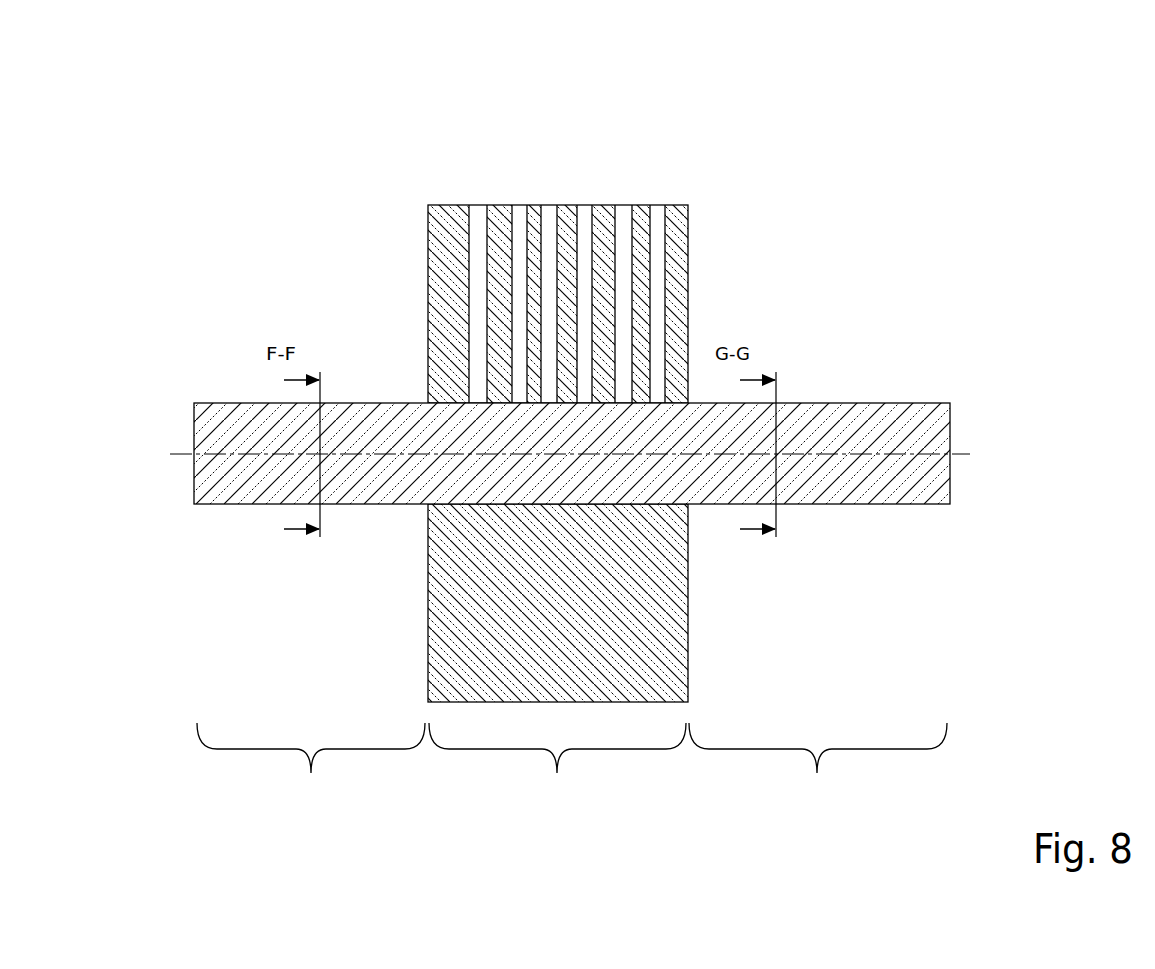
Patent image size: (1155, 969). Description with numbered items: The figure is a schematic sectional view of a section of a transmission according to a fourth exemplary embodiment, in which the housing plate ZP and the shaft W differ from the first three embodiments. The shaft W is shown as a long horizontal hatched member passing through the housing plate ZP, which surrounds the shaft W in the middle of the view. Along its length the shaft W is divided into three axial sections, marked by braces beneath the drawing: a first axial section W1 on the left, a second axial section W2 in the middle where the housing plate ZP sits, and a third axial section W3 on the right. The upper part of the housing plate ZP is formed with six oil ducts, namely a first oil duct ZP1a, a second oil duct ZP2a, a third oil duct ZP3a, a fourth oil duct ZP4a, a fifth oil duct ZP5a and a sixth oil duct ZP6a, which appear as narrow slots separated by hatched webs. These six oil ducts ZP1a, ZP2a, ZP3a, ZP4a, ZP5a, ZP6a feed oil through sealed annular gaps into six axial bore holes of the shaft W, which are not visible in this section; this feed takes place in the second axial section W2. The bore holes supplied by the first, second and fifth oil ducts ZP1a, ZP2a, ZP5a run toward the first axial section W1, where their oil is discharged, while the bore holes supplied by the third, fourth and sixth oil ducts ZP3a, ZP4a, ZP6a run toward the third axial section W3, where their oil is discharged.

The shaft W is at (225, 418).
The housing plate ZP is at (441, 243).
The first oil duct ZP1a is at (479, 202).
The second oil duct ZP2a is at (521, 202).
The third oil duct ZP3a is at (587, 202).
The fourth oil duct ZP4a is at (627, 202).
The fifth oil duct ZP5a is at (552, 202).
The sixth oil duct ZP6a is at (660, 202).
The first axial section W1 is at (311, 772).
The second axial section W2 is at (557, 772).
The third axial section W3 is at (818, 772).